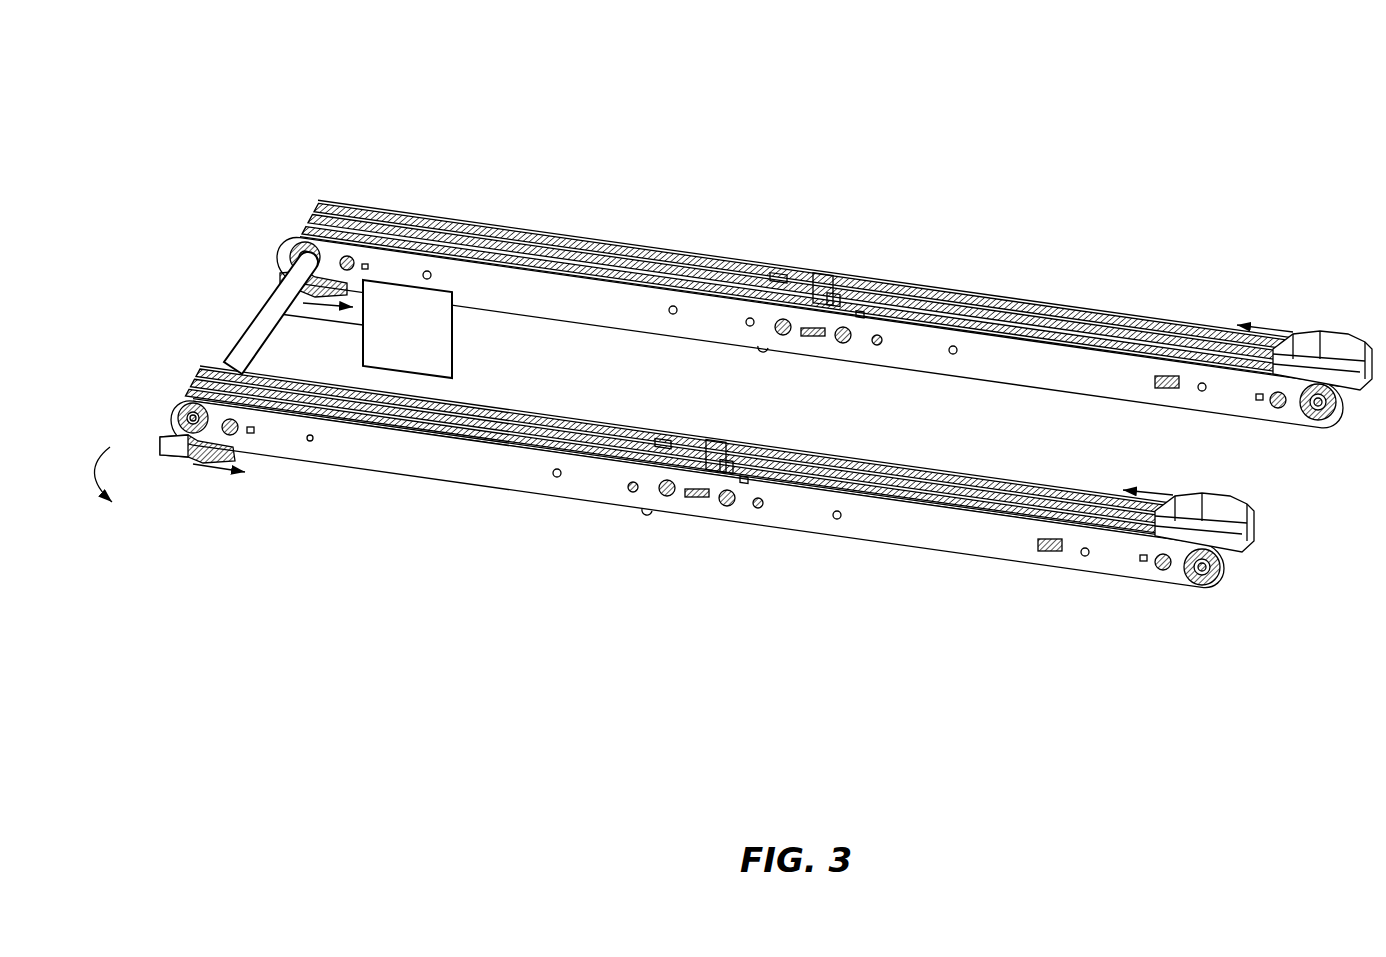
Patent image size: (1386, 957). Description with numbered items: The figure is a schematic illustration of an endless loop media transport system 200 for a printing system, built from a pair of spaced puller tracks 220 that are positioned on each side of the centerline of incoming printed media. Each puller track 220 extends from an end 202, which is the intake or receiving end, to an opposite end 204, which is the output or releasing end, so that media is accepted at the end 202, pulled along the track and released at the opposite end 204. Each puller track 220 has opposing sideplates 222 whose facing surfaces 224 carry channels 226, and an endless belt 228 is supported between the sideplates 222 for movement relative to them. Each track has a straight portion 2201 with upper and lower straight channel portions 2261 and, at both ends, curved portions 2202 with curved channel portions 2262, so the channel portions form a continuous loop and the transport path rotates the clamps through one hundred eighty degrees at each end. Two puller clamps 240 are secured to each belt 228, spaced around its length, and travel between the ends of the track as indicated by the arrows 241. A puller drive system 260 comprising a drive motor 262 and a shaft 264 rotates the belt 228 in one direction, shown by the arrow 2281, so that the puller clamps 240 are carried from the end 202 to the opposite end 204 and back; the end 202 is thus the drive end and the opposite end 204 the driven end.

The endless loop media transport system 200 is at (1218, 96).
The end 202 is at (218, 170).
The opposite end 204 is at (1185, 300).
The puller track 220 is at (662, 232).
The straight portion 2201 is at (897, 288).
The curved portion 2202 is at (322, 212).
The sideplate 222 is at (587, 303).
The opposing surface 224 is at (932, 557).
The channel 226 is at (843, 472).
The straight channel portion 2261 is at (670, 272).
The curved channel portion 2262 is at (317, 217).
The belt 228 is at (423, 233).
The arrow 2281 is at (93, 469).
The puller clamp 240 is at (1330, 328).
The arrow 241 is at (325, 297).
The puller drive system 260 is at (487, 367).
The drive motor 262 is at (442, 328).
The shaft 264 is at (257, 332).